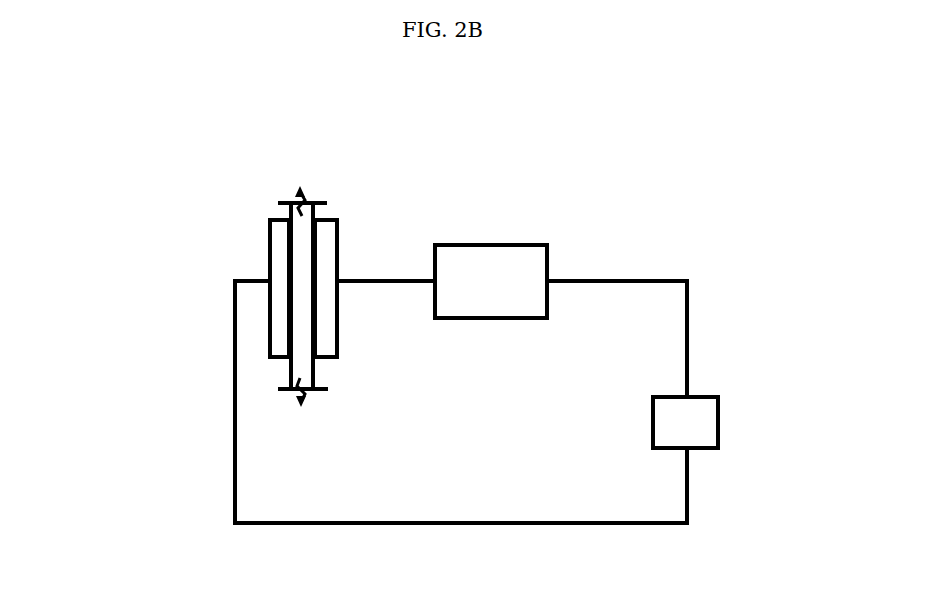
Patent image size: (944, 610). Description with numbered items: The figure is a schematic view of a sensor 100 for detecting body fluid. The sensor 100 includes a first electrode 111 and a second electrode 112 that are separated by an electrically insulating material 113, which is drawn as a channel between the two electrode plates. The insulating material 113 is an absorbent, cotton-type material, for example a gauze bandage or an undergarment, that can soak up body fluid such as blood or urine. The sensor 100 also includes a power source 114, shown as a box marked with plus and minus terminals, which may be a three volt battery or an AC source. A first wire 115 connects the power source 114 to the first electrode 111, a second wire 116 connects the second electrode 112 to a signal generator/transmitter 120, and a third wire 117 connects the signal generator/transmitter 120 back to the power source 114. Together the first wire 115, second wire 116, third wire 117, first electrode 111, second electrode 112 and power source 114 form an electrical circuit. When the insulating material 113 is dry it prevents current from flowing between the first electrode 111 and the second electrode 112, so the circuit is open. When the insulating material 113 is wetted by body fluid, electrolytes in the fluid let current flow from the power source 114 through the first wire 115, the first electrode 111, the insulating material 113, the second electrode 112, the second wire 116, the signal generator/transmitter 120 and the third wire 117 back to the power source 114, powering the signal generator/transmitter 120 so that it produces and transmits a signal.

The sensor 100 is at (98, 190).
The first electrode 111 is at (268, 247).
The second electrode 112 is at (337, 240).
The electrically insulating material 113 is at (280, 212).
The power source 114 is at (707, 397).
The first wire 115 is at (235, 450).
The second wire 116 is at (397, 281).
The third wire 117 is at (600, 281).
The signal generator/transmitter 120 is at (483, 245).